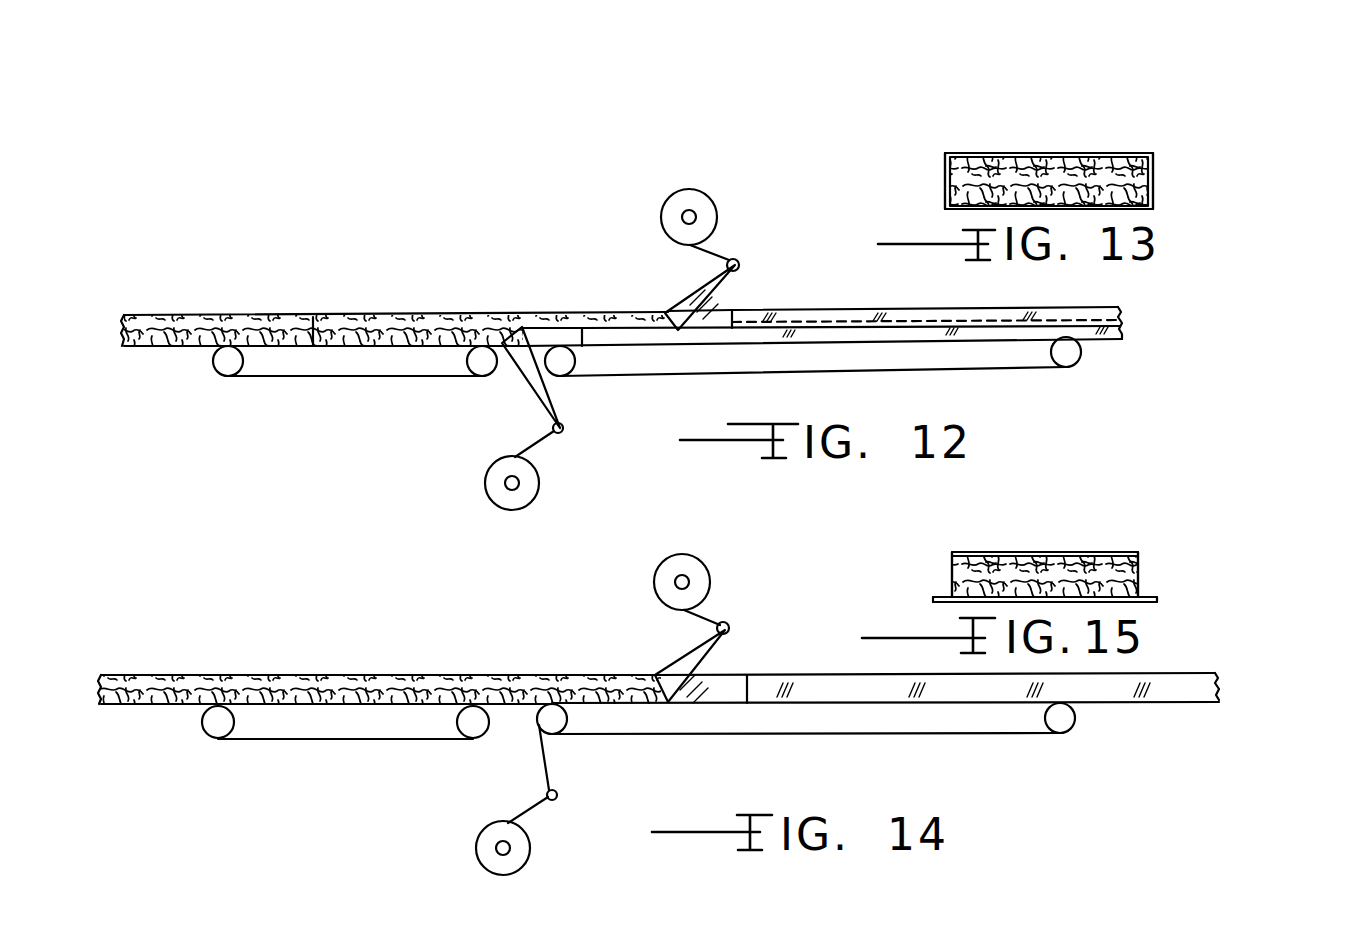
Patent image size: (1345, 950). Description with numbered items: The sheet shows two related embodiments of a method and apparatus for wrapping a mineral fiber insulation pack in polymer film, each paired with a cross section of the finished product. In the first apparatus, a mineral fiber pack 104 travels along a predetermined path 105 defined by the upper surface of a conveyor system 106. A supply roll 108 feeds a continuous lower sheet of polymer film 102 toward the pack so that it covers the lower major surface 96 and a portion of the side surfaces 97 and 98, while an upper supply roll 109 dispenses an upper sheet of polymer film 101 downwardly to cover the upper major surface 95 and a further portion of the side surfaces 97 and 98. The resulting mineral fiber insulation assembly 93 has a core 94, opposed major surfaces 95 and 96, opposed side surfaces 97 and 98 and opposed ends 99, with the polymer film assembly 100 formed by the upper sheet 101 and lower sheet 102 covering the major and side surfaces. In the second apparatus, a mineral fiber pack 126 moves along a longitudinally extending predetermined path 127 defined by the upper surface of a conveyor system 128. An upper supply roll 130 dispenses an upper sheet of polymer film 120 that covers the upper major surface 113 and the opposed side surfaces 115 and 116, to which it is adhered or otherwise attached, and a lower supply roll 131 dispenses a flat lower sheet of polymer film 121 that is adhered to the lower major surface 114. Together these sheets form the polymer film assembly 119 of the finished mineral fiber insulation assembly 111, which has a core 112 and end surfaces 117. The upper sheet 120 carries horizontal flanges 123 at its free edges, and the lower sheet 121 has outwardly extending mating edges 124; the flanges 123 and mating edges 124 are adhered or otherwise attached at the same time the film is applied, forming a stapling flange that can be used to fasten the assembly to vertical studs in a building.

In FIG. 13, the mineral fiber insulation assembly 93 is at (1050, 142).
In FIG. 13, the core 94 is at (1073, 168).
In FIG. 12, the upper major surface 95 is at (230, 315).
In FIG. 13, the upper major surface 95 is at (1120, 150).
In FIG. 12, the lower major surface 96 is at (170, 348).
In FIG. 13, the lower major surface 96 is at (1130, 209).
In FIG. 13, the side surface 97 is at (947, 190).
In FIG. 12, the side surface 98 is at (480, 315).
In FIG. 13, the side surface 98 is at (1153, 188).
In FIG. 13, the end 99 is at (1153, 153).
In FIG. 13, the polymer film assembly 100 is at (1006, 142).
In FIG. 12, the upper sheet of polymer film 101 is at (693, 297).
In FIG. 13, the upper sheet of polymer film 101 is at (965, 152).
In FIG. 12, the lower sheet of polymer film 102 is at (523, 378).
In FIG. 13, the lower sheet of polymer film 102 is at (955, 212).
In FIG. 12, the mineral fiber pack 104 is at (165, 316).
In FIG. 12, the predetermined path 105 is at (313, 317).
In FIG. 12, the conveyor system 106 is at (278, 385).
In FIG. 12, the supply roll 108 is at (485, 483).
In FIG. 12, the upper supply roll 109 is at (697, 190).
In FIG. 15, the mineral fiber insulation assembly 111 is at (1014, 544).
In FIG. 15, the core 112 is at (1070, 575).
In FIG. 14, the upper major surface 113 is at (450, 675).
In FIG. 15, the upper major surface 113 is at (1054, 583).
In FIG. 14, the lower major surface 114 is at (647, 708).
In FIG. 15, the lower major surface 114 is at (965, 602).
In FIG. 15, the side surface 115 is at (950, 568).
In FIG. 14, the side surface 116 is at (380, 705).
In FIG. 15, the side surface 116 is at (1140, 568).
In FIG. 15, the end surface 117 is at (1138, 552).
In FIG. 15, the polymer film assembly 119 is at (961, 544).
In FIG. 14, the upper sheet of polymer film 120 is at (683, 628).
In FIG. 15, the upper sheet of polymer film 120 is at (1095, 563).
In FIG. 14, the lower sheet of polymer film 121 is at (553, 772).
In FIG. 15, the lower sheet of polymer film 121 is at (1135, 603).
In FIG. 15, the horizontal flanges 123 is at (1158, 592).
In FIG. 15, the mating edges 124 is at (1160, 601).
In FIG. 14, the mineral fiber pack 126 is at (160, 675).
In FIG. 14, the predetermined path 127 is at (283, 703).
In FIG. 14, the conveyor system 128 is at (330, 755).
In FIG. 14, the upper supply roll 130 is at (707, 570).
In FIG. 14, the lower supply roll 131 is at (528, 863).